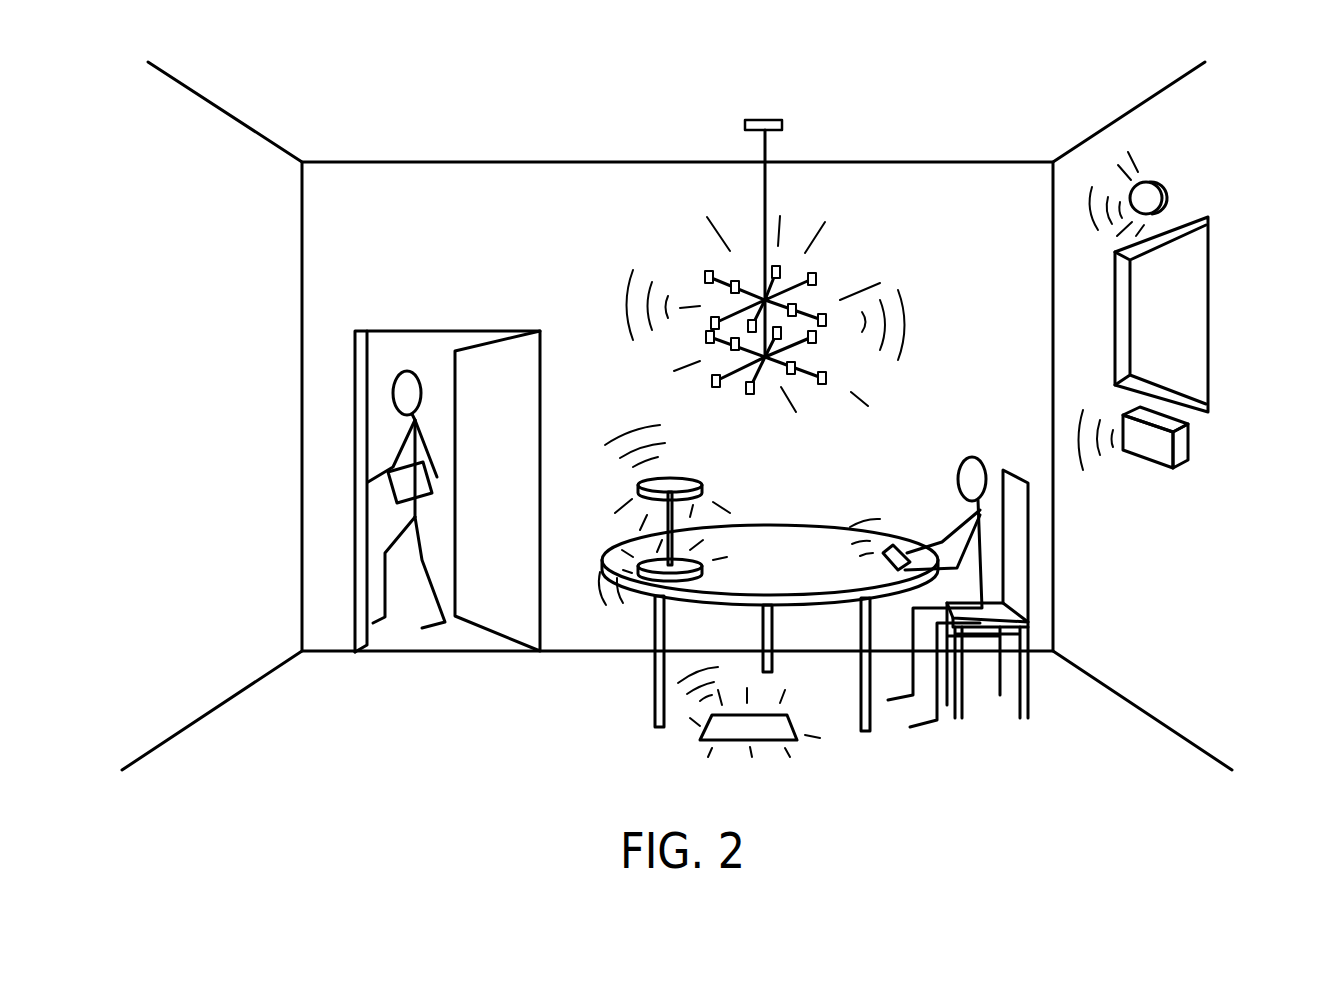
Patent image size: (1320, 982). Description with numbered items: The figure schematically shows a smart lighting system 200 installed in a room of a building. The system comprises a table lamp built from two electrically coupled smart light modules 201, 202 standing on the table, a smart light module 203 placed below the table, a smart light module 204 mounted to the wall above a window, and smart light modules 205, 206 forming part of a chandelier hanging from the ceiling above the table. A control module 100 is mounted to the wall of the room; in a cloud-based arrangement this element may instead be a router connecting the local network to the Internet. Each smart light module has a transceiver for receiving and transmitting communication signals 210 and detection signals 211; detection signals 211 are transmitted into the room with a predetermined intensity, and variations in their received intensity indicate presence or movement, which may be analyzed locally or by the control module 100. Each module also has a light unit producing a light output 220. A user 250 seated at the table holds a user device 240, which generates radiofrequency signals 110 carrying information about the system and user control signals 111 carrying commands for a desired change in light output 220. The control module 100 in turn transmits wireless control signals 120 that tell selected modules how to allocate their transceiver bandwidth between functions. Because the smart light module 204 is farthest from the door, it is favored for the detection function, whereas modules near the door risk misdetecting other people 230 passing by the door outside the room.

The smart lighting system 200 is at (962, 83).
The other people 230 is at (420, 372).
The smart light module 205 is at (797, 366).
The smart light module 206 is at (826, 382).
The smart light module 202 is at (702, 578).
The smart light module 201 is at (688, 478).
The light output 220 is at (616, 498).
The communication signals 210 is at (606, 415).
The detection signals 211 is at (628, 416).
The smart light module 203 is at (793, 722).
The user 250 is at (986, 459).
The user device 240 is at (905, 540).
The radiofrequency signals 110 is at (806, 504).
The user control signals 111 is at (851, 508).
The smart light module 204 is at (1180, 186).
The control module 100 is at (1188, 446).
The control signals 120 is at (1098, 478).